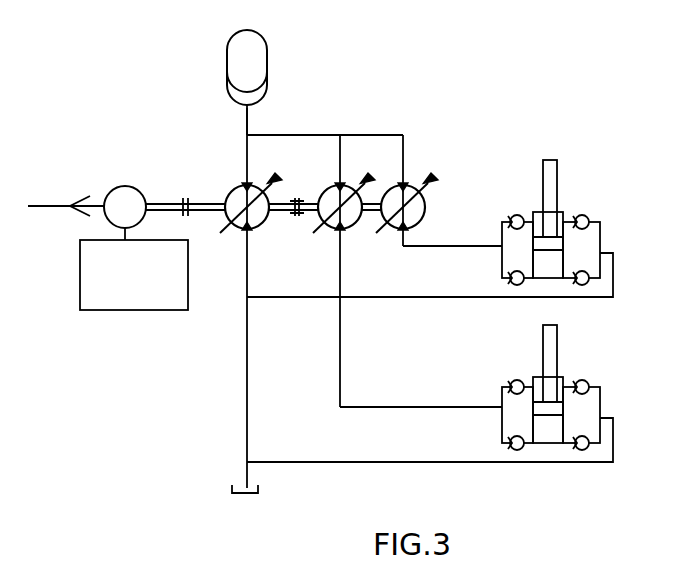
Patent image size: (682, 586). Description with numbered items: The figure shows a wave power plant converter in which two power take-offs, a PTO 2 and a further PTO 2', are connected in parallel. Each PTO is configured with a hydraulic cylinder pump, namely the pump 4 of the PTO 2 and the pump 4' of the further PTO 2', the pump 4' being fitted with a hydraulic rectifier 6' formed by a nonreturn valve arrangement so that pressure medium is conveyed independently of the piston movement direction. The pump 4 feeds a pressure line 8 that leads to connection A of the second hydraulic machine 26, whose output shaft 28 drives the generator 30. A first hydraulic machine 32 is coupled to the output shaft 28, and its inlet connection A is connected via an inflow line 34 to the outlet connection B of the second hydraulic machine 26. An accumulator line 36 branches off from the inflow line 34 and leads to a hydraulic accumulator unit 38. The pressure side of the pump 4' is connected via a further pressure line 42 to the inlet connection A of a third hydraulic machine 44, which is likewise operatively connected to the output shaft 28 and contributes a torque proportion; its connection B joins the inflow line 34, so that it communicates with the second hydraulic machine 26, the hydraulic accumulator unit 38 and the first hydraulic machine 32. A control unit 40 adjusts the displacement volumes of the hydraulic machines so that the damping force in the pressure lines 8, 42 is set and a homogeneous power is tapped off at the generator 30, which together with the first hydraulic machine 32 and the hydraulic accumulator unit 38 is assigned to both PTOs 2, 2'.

The PTO 2 is at (567, 399).
The further PTO 2' is at (564, 205).
The pump 4 is at (524, 357).
The pump 4' is at (525, 165).
The hydraulic rectifier 6' is at (607, 232).
The pressure line 8 is at (443, 405).
The second hydraulic machine 26 is at (322, 214).
The output shaft 28 is at (308, 203).
The generator 30 is at (136, 199).
The first hydraulic machine 32 is at (240, 229).
The inflow line 34 is at (393, 133).
The accumulator line 36 is at (248, 121).
The hydraulic accumulator unit 38 is at (258, 57).
The control unit 40 is at (80, 290).
The further pressure line 42 is at (466, 244).
The third hydraulic machine 44 is at (414, 186).